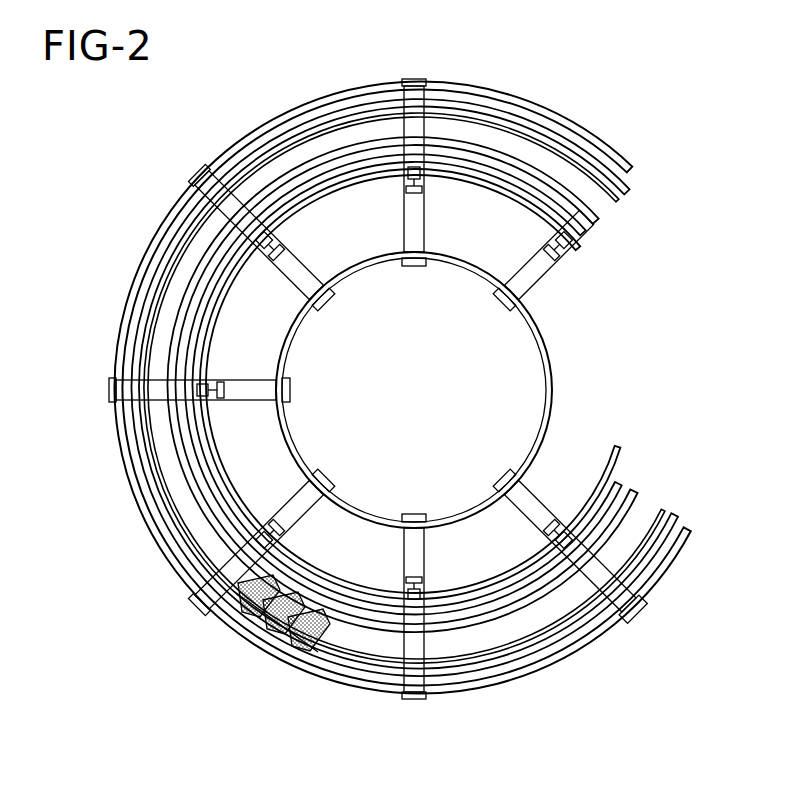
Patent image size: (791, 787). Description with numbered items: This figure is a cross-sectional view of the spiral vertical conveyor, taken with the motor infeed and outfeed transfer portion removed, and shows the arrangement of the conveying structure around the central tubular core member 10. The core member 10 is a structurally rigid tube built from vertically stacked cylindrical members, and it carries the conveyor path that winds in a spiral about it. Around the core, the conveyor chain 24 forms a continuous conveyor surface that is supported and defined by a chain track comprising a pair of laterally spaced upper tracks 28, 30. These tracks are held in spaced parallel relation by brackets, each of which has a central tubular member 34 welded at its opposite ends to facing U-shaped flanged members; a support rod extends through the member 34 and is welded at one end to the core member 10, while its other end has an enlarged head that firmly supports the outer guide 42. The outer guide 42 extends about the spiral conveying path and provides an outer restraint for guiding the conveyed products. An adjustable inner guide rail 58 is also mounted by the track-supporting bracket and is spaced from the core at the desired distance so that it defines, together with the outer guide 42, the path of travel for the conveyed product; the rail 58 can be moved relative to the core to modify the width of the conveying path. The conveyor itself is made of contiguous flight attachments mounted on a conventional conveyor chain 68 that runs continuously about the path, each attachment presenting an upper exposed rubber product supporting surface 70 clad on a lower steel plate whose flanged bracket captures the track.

The central tubular core member 10 is at (540, 326).
The conveyor chain 24 is at (245, 610).
The upper track 28 is at (216, 240).
The upper track 30 is at (163, 258).
The central tubular member 34 is at (263, 380).
The outer guide 42 is at (588, 640).
The adjustable inner guide rail 58 is at (278, 510).
The conveyor chain 68 is at (618, 458).
The rubber product supporting surface 70 is at (270, 625).